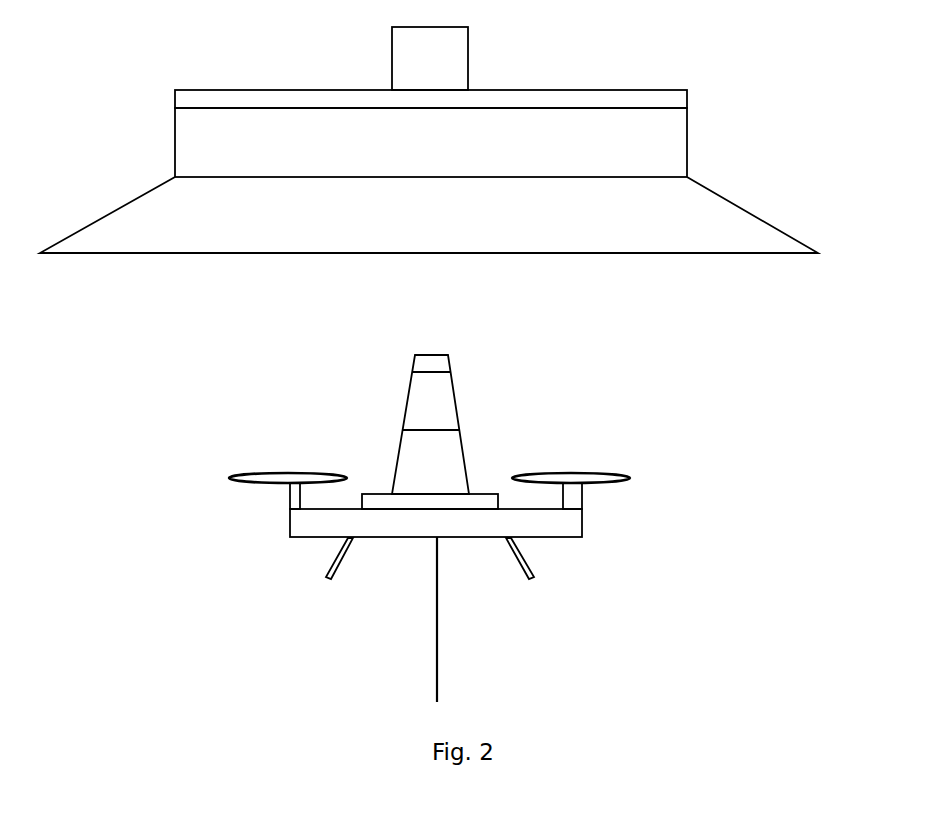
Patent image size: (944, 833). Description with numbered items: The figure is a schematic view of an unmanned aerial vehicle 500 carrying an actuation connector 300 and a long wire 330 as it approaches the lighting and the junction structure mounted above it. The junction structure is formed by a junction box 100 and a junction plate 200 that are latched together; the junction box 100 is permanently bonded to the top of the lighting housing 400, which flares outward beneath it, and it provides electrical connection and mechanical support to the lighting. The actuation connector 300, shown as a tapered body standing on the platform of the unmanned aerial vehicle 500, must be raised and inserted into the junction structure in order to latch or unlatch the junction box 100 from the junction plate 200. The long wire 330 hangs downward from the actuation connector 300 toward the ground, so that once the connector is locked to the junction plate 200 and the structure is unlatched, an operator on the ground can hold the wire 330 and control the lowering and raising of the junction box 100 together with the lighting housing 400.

The junction box 100 is at (677, 137).
The junction plate 200 is at (673, 102).
The actuation connector 300 is at (458, 407).
The long wire 330 is at (437, 673).
The lighting housing 400 is at (733, 229).
The unmanned aerial vehicle 500 is at (572, 525).